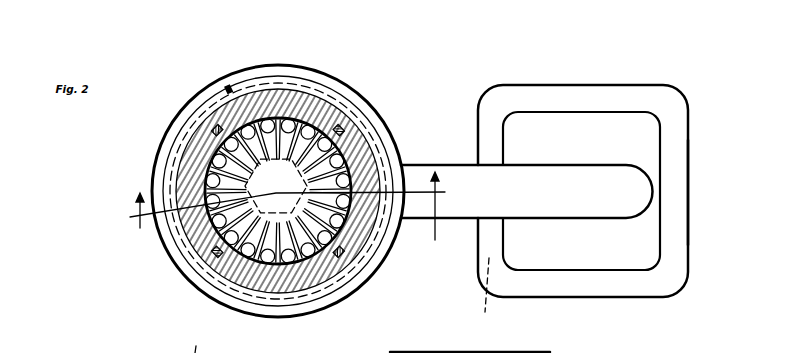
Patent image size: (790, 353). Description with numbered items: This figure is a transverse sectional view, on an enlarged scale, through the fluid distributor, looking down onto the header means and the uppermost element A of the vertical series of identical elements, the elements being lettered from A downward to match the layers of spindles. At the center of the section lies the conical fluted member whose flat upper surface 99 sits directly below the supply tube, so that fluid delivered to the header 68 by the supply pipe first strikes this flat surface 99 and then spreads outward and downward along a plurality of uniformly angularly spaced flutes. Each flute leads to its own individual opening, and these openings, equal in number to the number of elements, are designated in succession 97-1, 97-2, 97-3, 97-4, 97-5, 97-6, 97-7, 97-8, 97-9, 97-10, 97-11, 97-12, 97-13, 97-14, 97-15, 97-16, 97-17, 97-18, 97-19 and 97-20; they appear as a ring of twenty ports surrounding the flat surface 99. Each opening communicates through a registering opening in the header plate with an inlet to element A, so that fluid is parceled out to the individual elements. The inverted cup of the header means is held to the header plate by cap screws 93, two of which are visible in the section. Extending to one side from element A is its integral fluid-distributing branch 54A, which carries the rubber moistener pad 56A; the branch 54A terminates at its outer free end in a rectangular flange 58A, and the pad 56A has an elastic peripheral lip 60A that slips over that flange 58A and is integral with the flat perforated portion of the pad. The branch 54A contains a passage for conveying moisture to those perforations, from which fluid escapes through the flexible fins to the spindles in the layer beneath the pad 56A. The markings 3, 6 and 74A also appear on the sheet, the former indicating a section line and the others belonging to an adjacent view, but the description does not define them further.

The opening 97-1 is at (349, 177).
The opening 97-2 is at (342, 157).
The opening 97-3 is at (328, 138).
The opening 97-4 is at (310, 126).
The opening 97-5 is at (288, 119).
The opening 97-6 is at (267, 119).
The opening 97-7 is at (246, 126).
The opening 97-8 is at (227, 139).
The opening 97-9 is at (213, 158).
The opening 97-10 is at (206, 178).
The opening 97-11 is at (206, 199).
The opening 97-12 is at (213, 225).
The opening 97-13 is at (226, 242).
The opening 97-14 is at (243, 254).
The opening 97-15 is at (265, 263).
The opening 97-16 is at (287, 263).
The opening 97-17 is at (309, 257).
The opening 97-18 is at (327, 244).
The opening 97-19 is at (343, 225).
The opening 97-20 is at (349, 205).
The cap screws 93 is at (336, 112).
The flat upper surface 99 is at (266, 185).
The header 68 is at (227, 86).
The uppermost element A is at (194, 121).
The section line 3- 3 is at (287, 218).
The branch 54A is at (550, 174).
The pad 56A is at (611, 86).
The rectangular flange 58A is at (650, 140).
The elastic peripheral lip 60A is at (689, 173).
The element 6 is at (195, 343).
The element 74A is at (86, 340).